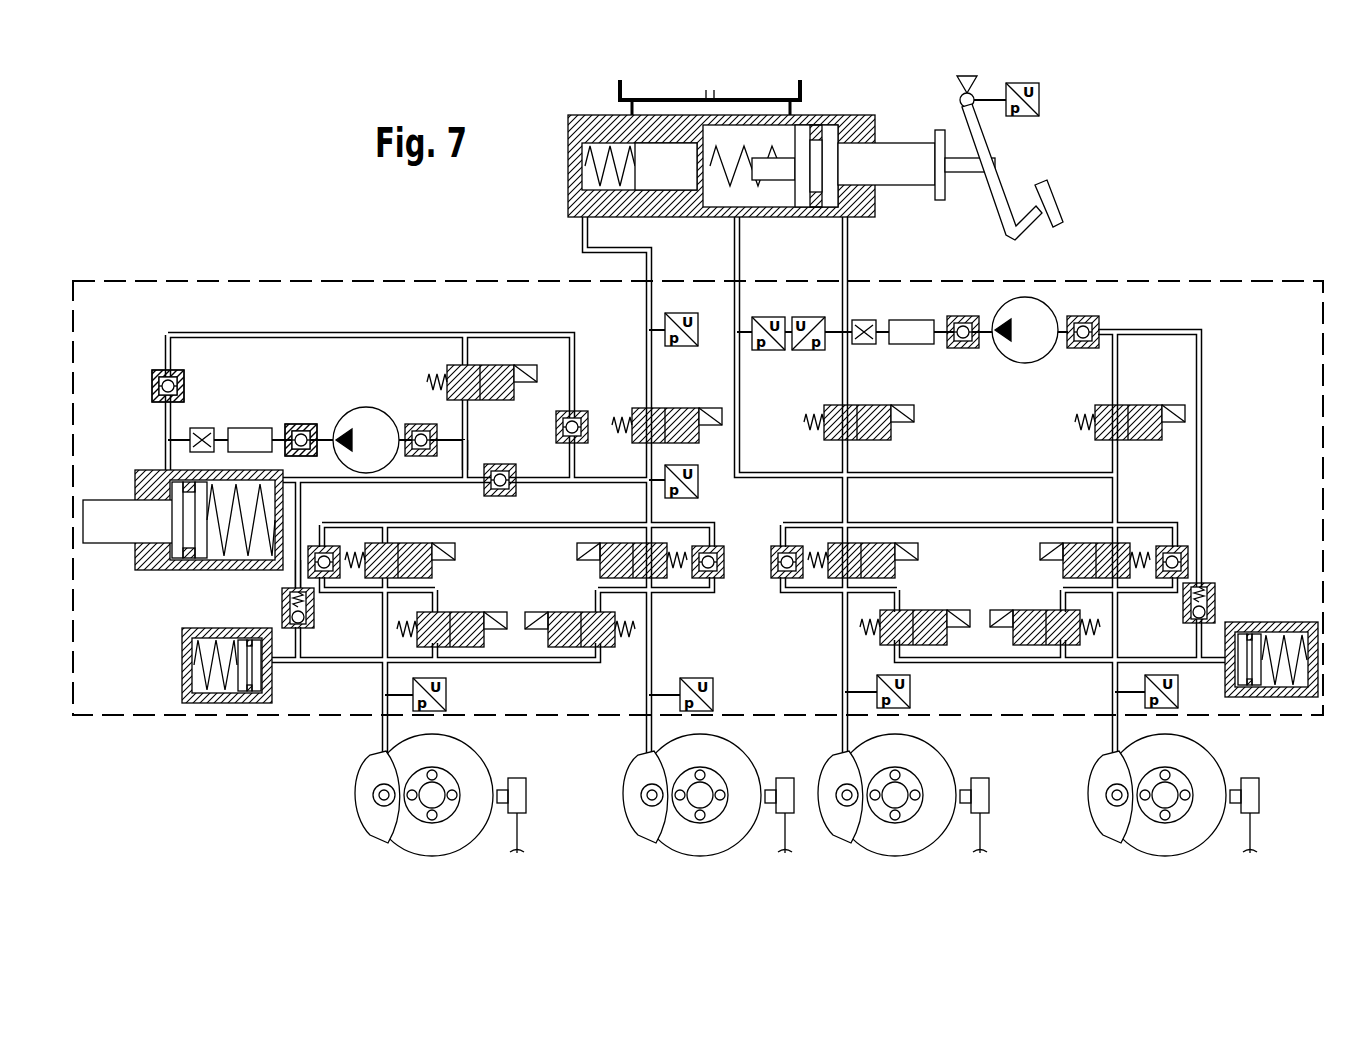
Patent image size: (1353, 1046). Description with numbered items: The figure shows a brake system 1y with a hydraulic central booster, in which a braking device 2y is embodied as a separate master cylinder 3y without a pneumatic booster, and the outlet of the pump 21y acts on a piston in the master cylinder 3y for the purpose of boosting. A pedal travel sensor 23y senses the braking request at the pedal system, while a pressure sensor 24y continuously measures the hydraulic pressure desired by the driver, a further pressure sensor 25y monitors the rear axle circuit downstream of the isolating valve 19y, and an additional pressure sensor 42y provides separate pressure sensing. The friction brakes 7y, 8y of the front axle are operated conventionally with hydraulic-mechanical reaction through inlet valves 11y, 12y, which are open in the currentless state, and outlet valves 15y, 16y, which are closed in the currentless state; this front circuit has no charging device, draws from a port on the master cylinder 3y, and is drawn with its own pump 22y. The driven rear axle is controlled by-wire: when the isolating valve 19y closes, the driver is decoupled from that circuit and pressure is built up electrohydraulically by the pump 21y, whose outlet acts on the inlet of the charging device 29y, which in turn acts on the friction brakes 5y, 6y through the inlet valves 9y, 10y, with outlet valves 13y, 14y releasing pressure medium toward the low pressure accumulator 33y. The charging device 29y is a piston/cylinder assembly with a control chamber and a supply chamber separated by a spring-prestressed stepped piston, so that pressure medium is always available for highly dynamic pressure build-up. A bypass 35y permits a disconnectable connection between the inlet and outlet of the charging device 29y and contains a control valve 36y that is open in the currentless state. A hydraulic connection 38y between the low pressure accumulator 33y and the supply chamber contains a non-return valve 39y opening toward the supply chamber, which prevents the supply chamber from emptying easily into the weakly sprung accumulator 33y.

The brake system 1y is at (180, 220).
The braking device 2y is at (860, 98).
The master cylinder 3y is at (600, 120).
The friction brake 5y is at (382, 826).
The friction brake 6y is at (650, 826).
The friction brake 7y is at (848, 816).
The friction brake 8y is at (1118, 816).
The inlet valve 9y is at (456, 567).
The inlet valve 10y is at (600, 566).
The inlet valve 11y is at (895, 567).
The inlet valve 12y is at (1063, 566).
The outlet valve 13y is at (485, 636).
The outlet valve 14y is at (610, 647).
The outlet valve 15y is at (916, 642).
The outlet valve 16y is at (1070, 645).
The isolating valve 19y is at (636, 408).
The hydraulic pump 21y is at (368, 425).
The pump 22y is at (1022, 350).
The pedal travel sensor 23y is at (1041, 100).
The pressure sensor 24y is at (808, 350).
The pressure sensor 25y is at (700, 483).
The charging device 29y is at (168, 596).
The low pressure accumulator 33y is at (178, 697).
The bypass 35y is at (470, 456).
The control valve 36y is at (484, 365).
The hydraulic connection 38y is at (295, 575).
The non-return valve 39y is at (314, 606).
The pressure sensor 42y is at (681, 313).